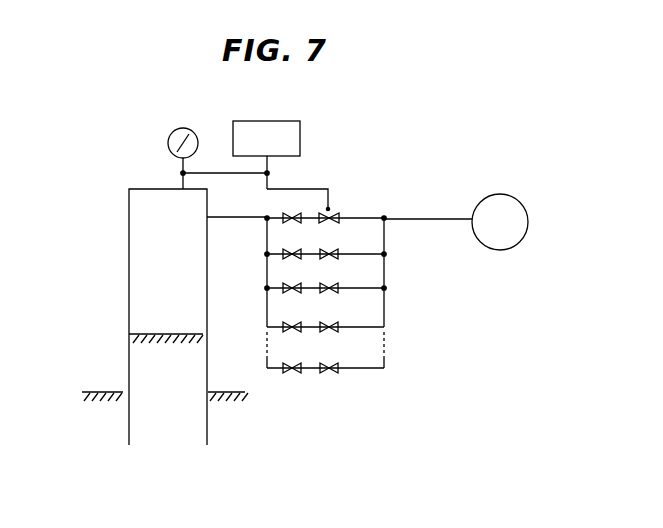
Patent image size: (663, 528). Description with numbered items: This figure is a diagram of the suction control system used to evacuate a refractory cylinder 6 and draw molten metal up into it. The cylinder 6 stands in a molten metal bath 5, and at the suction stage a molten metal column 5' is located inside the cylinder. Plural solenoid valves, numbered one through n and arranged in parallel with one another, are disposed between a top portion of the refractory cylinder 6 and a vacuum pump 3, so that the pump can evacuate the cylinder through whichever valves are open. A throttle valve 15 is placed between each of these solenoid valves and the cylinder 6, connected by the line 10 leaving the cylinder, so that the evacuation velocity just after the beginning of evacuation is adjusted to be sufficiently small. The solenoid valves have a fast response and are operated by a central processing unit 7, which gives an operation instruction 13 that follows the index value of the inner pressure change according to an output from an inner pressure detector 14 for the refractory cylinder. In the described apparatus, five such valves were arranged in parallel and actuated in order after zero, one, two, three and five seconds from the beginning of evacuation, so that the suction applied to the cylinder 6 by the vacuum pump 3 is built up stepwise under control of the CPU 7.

The vacuum pump 3 is at (527, 187).
The molten metal bath 5 is at (165, 381).
The molten metal column 5' is at (145, 318).
The refractory cylinder 6 is at (143, 189).
The central processing unit 7 is at (300, 123).
The discharge pipe 10 is at (207, 243).
The operation instruction 13 is at (330, 189).
The inner pressure detector 14 is at (206, 173).
The throttle valve 15 is at (283, 219).